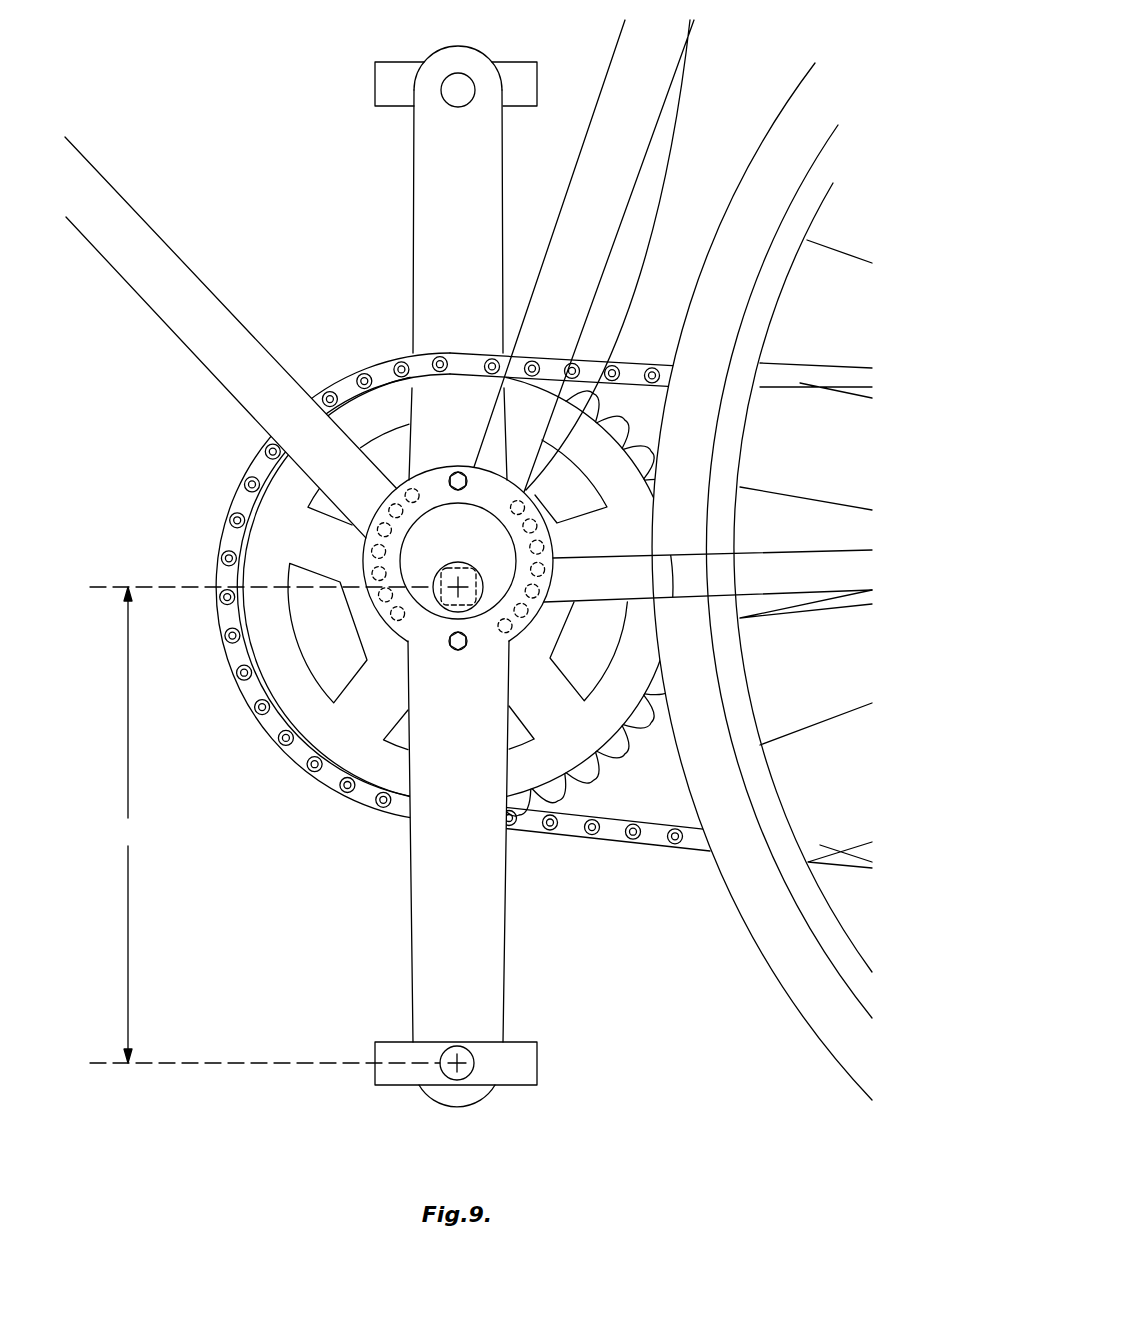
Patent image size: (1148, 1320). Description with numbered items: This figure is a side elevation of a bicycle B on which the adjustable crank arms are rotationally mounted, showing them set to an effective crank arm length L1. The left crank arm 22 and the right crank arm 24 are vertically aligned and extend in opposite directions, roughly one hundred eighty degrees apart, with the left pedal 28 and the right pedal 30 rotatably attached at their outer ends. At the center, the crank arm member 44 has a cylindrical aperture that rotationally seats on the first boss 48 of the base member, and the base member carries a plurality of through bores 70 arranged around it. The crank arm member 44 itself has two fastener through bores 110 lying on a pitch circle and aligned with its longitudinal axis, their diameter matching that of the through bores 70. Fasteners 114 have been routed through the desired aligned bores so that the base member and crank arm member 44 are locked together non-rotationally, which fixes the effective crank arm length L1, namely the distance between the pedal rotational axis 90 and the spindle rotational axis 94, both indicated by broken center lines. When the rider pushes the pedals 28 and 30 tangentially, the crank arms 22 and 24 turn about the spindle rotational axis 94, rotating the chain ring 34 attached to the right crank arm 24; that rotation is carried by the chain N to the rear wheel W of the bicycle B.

The right pedal 30 is at (390, 88).
The left pedal 28 is at (537, 1064).
The right crank arm 24 is at (412, 252).
The crank arm member 44 is at (505, 958).
The first boss 48 is at (447, 530).
The through bores 70 is at (517, 500).
The chain ring 34 is at (277, 532).
The left crank arm 22 is at (528, 645).
The fasteners 114 is at (453, 645).
The fastener through bores 110 is at (465, 648).
The spindle rotational axis 94 is at (147, 582).
The pedal rotational axis 90 is at (184, 1072).
The effective crank arm length L1 is at (127, 825).
The bicycle B is at (173, 252).
The chain N is at (693, 852).
The rear wheel W is at (827, 937).